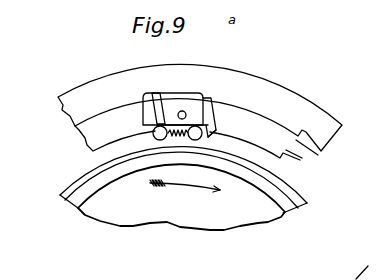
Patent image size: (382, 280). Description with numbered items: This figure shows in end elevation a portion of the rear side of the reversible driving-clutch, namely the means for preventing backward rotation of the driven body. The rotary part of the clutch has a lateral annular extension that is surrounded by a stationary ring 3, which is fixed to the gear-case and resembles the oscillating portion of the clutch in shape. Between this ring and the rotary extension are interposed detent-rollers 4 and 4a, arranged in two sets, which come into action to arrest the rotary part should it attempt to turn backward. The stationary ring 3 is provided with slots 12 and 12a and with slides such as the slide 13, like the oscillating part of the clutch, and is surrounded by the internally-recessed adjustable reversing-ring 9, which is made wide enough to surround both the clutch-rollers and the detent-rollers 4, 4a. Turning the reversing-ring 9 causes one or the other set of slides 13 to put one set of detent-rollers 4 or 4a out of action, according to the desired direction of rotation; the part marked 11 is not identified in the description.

The reversing-ring 9 is at (95, 88).
The stationary ring 3 is at (290, 97).
The detent-rollers 4 is at (87, 155).
The detent-rollers 4a is at (283, 163).
The pawl arm 11 is at (209, 112).
The slot 12 is at (167, 123).
The slot 12a is at (210, 126).
The slide 13 is at (158, 108).